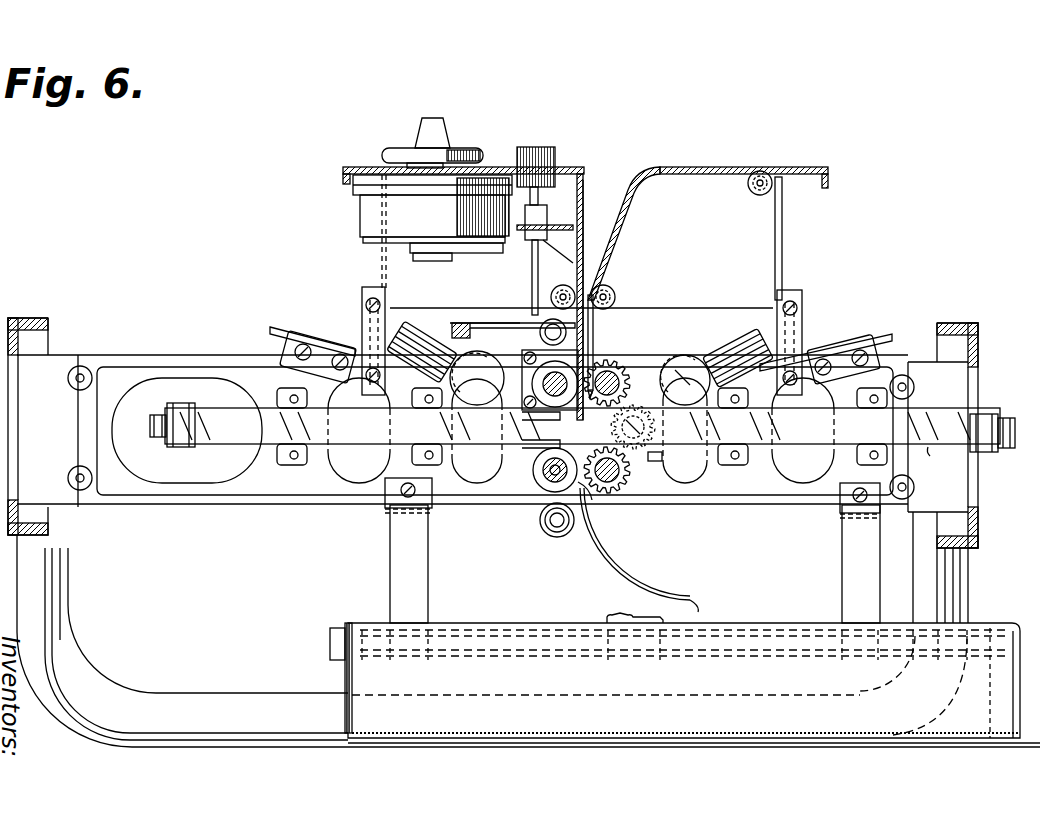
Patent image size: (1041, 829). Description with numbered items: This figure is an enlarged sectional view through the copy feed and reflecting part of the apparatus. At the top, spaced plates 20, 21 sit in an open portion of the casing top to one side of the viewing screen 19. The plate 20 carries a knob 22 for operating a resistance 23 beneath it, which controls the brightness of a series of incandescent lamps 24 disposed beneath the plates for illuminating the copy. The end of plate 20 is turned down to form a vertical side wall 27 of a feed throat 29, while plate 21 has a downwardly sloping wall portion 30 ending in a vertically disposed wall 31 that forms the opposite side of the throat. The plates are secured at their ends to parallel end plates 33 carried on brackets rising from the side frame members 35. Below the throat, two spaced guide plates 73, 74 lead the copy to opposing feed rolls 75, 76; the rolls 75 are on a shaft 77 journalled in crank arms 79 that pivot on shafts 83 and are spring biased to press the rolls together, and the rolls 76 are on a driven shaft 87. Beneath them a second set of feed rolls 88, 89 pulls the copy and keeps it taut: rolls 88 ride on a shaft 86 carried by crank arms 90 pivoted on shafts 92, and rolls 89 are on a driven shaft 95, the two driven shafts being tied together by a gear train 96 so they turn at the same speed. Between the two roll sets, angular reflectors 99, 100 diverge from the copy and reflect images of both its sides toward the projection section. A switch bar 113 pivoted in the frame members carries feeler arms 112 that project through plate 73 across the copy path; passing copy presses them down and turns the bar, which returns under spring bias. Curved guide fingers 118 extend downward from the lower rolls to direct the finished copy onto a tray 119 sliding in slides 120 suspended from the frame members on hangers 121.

The viewing screen 19 is at (549, 146).
The plate 20 is at (366, 166).
The plate 21 is at (706, 167).
The knob 22 is at (442, 116).
The resistance 23 is at (366, 237).
The incandescent lamps 24 is at (477, 320).
The vertical side wall 27 is at (582, 257).
The feed throat 29 is at (592, 196).
The downwardly sloping wall portion 30 is at (622, 207).
The vertically disposed wall 31 is at (612, 310).
The end plates 33 is at (752, 232).
The side frame members 35 is at (306, 508).
The guide plate 73 is at (549, 277).
The guide plate 74 is at (594, 337).
The feed rolls 75 is at (548, 385).
The feed rolls 76 is at (610, 380).
The shaft 77 is at (548, 470).
The crank arms 79 is at (542, 387).
The shafts 83 is at (545, 308).
The shaft 86 is at (550, 472).
The driven shaft 87 is at (616, 378).
The feed rolls 88 is at (545, 518).
The feed rolls 89 is at (616, 480).
The crank arms 90 is at (590, 500).
The shafts 92 is at (558, 527).
The driven shaft 95 is at (625, 470).
The gear train 96 is at (662, 456).
The reflector 99 is at (258, 432).
The reflector 100 is at (928, 447).
The feeler arms 112 is at (522, 322).
The switch bar 113 is at (455, 318).
The guide fingers 118 is at (630, 573).
The tray 119 is at (796, 622).
The slides 120 is at (342, 628).
The hangers 121 is at (392, 553).